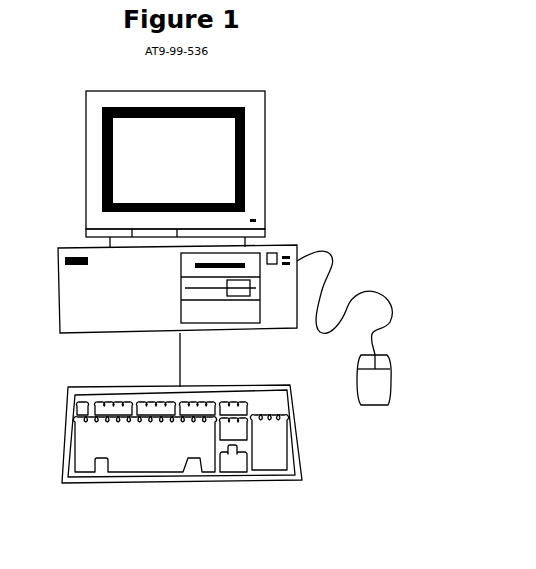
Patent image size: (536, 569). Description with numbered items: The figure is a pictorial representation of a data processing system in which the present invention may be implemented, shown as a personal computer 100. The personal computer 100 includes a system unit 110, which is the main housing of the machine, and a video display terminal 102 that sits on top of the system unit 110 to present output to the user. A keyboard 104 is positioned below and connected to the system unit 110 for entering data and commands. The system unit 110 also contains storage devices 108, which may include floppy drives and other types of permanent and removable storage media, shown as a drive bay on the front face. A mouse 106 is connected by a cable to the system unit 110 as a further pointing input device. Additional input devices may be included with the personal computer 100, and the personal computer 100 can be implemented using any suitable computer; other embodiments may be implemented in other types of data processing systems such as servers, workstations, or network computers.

The personal computer 100 is at (366, 203).
The video display terminal 102 is at (270, 137).
The keyboard 104 is at (280, 490).
The mouse 106 is at (398, 367).
The storage devices 108 is at (176, 293).
The system unit 110 is at (225, 316).